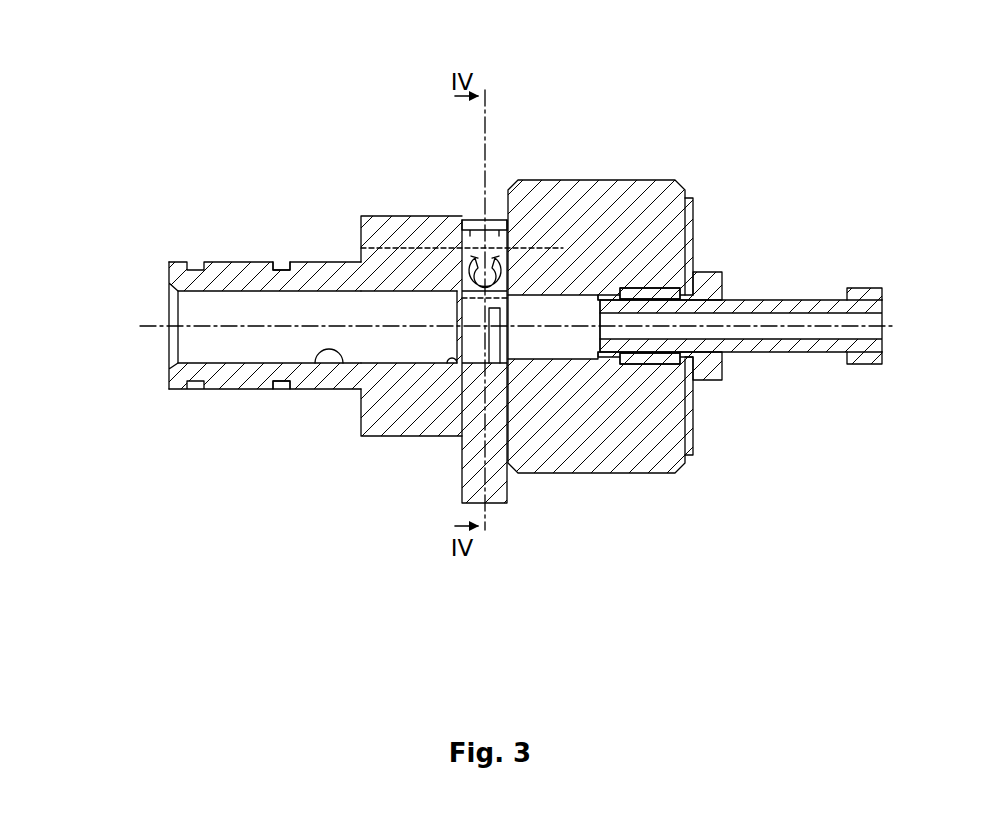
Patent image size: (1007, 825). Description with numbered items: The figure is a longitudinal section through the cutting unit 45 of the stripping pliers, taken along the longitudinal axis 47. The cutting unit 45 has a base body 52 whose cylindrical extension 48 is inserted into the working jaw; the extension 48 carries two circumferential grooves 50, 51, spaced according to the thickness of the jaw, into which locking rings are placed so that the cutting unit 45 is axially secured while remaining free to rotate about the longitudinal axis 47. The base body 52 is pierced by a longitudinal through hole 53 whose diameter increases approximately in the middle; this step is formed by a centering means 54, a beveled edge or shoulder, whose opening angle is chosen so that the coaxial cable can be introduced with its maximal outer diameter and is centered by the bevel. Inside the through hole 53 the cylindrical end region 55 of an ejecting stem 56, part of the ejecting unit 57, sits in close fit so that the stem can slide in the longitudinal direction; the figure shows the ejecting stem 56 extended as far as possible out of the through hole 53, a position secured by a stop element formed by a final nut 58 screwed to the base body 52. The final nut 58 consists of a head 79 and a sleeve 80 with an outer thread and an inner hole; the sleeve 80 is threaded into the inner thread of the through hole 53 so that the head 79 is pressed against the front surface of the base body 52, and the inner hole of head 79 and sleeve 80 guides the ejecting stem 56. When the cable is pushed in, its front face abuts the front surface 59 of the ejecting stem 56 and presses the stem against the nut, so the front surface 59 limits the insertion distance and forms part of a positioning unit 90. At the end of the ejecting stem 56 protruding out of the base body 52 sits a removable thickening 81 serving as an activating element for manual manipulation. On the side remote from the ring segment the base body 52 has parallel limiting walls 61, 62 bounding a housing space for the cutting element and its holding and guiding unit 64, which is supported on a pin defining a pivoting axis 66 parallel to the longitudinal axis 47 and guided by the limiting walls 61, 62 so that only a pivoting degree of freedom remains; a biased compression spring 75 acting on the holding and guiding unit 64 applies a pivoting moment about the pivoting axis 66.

The cutting unit 45 is at (283, 208).
The longitudinal axis 47 is at (488, 326).
The cylindrical extension 48 is at (237, 389).
The circumferential groove 50 is at (192, 389).
The circumferential groove 51 is at (278, 389).
The base body 52 is at (410, 403).
The through hole 53 is at (343, 363).
The centering means 54 is at (453, 363).
The cylindrical end region 55 is at (613, 345).
The ejecting stem 56 is at (785, 280).
The ejecting unit 57 is at (741, 201).
The final nut 58 is at (712, 368).
The front surface 59 is at (600, 352).
The limiting wall 61 is at (478, 218).
The limiting wall 62 is at (493, 228).
The holding and guiding unit 64 is at (493, 488).
The pivoting axis 66 is at (378, 246).
The compression spring 75 is at (466, 256).
The head 79 is at (709, 272).
The sleeve 80 is at (648, 290).
The removable thickening 81 is at (850, 354).
The positioning unit 90 is at (578, 300).